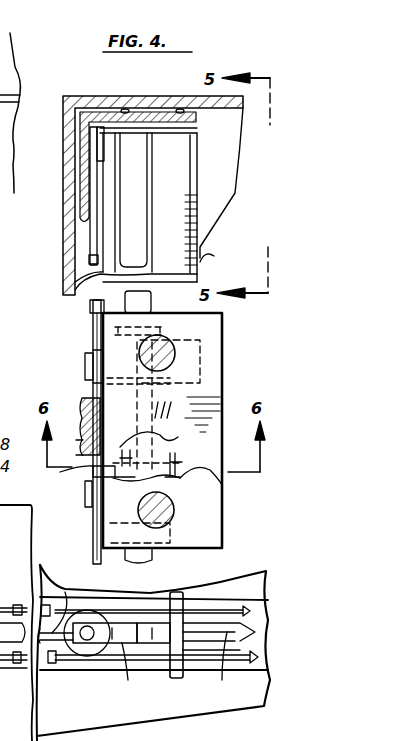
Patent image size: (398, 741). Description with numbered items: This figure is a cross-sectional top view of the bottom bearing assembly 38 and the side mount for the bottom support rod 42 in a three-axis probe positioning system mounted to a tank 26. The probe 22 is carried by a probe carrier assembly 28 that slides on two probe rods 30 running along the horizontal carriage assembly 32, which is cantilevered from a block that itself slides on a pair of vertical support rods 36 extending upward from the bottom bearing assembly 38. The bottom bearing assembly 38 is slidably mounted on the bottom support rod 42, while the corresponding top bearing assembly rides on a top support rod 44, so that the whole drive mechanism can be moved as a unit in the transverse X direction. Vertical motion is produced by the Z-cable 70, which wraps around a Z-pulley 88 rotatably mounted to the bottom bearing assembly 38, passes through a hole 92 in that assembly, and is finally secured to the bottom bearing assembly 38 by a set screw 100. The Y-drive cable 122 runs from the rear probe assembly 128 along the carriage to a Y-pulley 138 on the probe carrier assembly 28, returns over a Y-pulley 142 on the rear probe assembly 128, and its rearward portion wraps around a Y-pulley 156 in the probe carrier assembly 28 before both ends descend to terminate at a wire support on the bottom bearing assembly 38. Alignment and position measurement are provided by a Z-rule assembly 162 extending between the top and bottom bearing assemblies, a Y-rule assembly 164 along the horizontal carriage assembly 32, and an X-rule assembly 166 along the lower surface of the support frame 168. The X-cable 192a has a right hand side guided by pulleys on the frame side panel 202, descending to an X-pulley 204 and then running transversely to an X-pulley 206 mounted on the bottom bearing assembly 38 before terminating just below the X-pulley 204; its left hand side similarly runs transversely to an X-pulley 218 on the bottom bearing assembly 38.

The probe 22 is at (192, 587).
The tank 26 is at (15, 72).
The probe carrier assembly 28 is at (134, 675).
The probe rods 30 is at (245, 678).
The horizontal carriage assembly 32 is at (47, 567).
The vertical support rods 36 is at (176, 357).
The bottom bearing assembly 38 is at (222, 328).
The bottom support rod 42 is at (152, 192).
The top support rod 44 is at (146, 406).
The Z-cable 70 is at (181, 477).
The Z-pulley 88 is at (60, 472).
The hole 92 is at (222, 485).
The set screw 100 is at (145, 475).
The Y-drive cable 122 is at (240, 587).
The rear probe assembly 128 is at (45, 670).
The Y-pulley 138 is at (190, 640).
The Y-pulley 142 is at (14, 665).
The Y-pulley 156 is at (92, 652).
The Z-rule assembly 162 is at (80, 394).
The Y-rule assembly 164 is at (258, 587).
The X-rule assembly 166 is at (193, 193).
The support frame 168 is at (223, 259).
The X-cable 192a is at (90, 243).
The frame side panel 202 is at (197, 124).
The X-pulley 204 is at (90, 148).
The X-pulley 206 is at (85, 362).
The X-pulley 218 is at (85, 500).